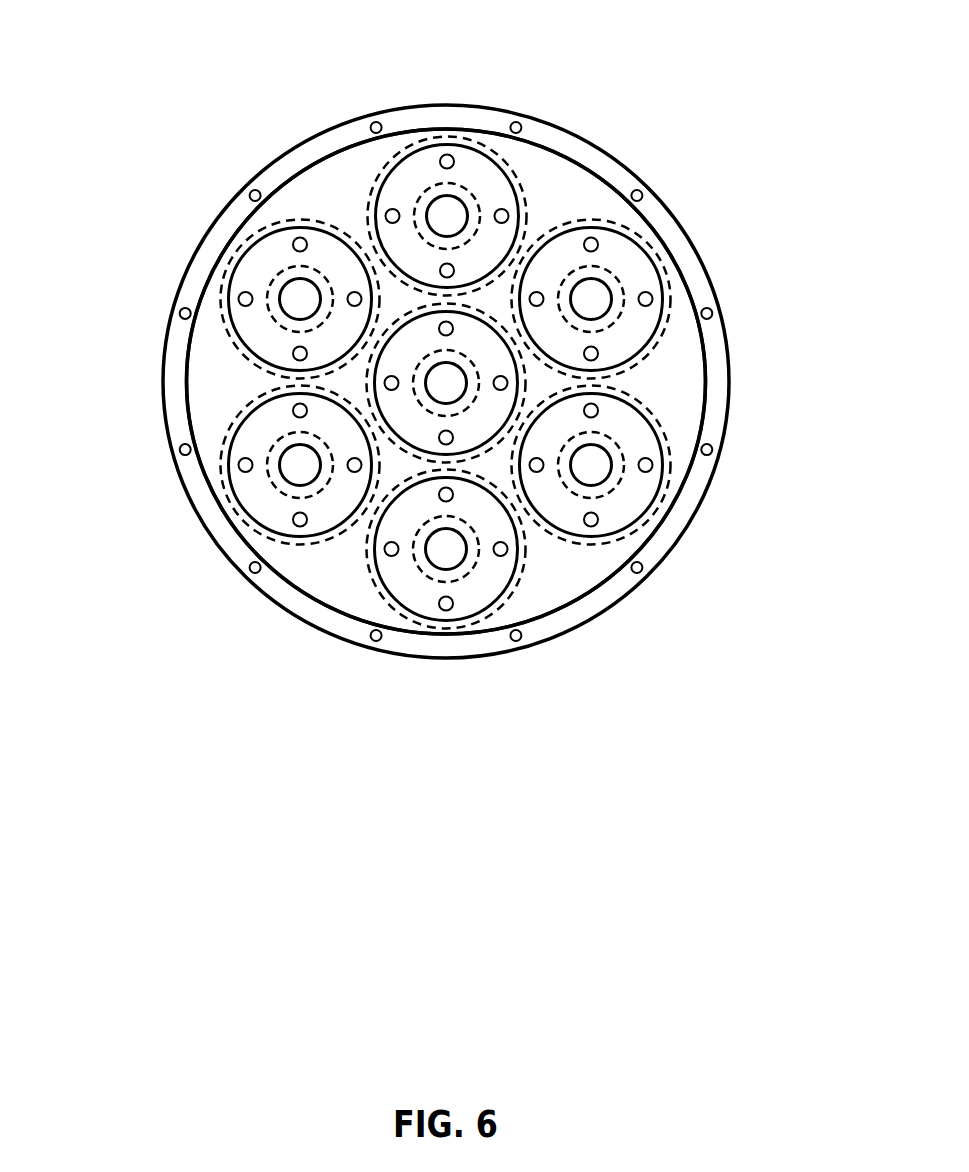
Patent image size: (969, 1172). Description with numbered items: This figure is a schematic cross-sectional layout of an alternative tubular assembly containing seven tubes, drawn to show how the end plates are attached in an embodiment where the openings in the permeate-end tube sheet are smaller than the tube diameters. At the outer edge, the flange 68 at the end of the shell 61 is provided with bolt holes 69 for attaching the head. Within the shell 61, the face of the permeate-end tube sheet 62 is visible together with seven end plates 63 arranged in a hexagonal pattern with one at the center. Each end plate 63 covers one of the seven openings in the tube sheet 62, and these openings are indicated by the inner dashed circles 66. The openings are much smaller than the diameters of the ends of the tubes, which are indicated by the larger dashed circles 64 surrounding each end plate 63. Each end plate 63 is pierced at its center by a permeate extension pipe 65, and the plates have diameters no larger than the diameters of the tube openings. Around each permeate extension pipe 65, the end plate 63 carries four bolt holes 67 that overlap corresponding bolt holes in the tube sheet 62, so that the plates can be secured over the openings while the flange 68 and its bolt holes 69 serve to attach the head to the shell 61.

The shell 61 is at (600, 172).
The permeate-end tube sheet 62 is at (678, 372).
The end plates 63 is at (623, 500).
The dashed circles indicating tube ends 64 is at (670, 297).
The permeate extension pipes 65 is at (277, 465).
The dashed circles indicating tube-sheet openings 66 is at (278, 440).
The bolt holes 67 is at (454, 162).
The flange 68 is at (302, 153).
The bolt holes 69 is at (523, 640).